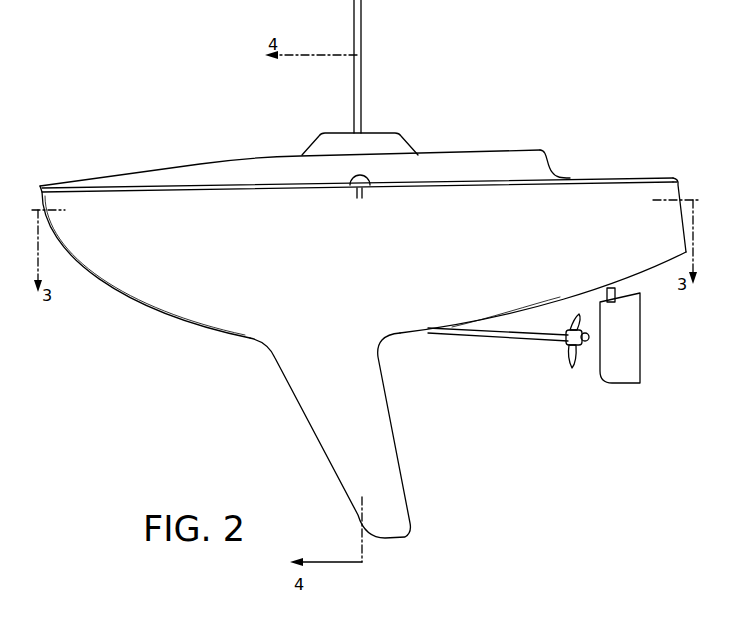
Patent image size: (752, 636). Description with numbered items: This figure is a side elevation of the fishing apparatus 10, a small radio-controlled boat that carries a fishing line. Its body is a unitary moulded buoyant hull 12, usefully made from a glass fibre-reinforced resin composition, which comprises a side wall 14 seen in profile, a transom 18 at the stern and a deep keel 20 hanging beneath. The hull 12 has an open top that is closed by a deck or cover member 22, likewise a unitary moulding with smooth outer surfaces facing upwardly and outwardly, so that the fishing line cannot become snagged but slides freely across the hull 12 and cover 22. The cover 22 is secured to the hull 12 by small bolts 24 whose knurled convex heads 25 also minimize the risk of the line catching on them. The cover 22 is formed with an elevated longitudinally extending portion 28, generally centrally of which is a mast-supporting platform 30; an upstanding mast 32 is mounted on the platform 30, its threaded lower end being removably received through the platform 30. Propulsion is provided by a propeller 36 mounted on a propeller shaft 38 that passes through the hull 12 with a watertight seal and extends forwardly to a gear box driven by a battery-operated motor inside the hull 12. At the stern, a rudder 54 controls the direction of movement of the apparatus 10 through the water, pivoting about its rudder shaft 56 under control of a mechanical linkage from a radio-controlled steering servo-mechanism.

The fishing apparatus 10 is at (363, 269).
The hull 12 is at (172, 344).
The side wall 14 is at (356, 254).
The transom 18 is at (678, 188).
The keel 20 is at (372, 430).
The deck or cover member 22 is at (468, 132).
The bolt 24 is at (365, 196).
The knurled convex head 25 is at (352, 178).
The elevated longitudinally extending portion 28 is at (505, 165).
The mast-supporting platform 30 is at (393, 140).
The mast 32 is at (363, 95).
The propeller 36 is at (572, 362).
The propeller shaft 38 is at (477, 342).
The rudder 54 is at (613, 372).
The rudder shaft 56 is at (607, 292).